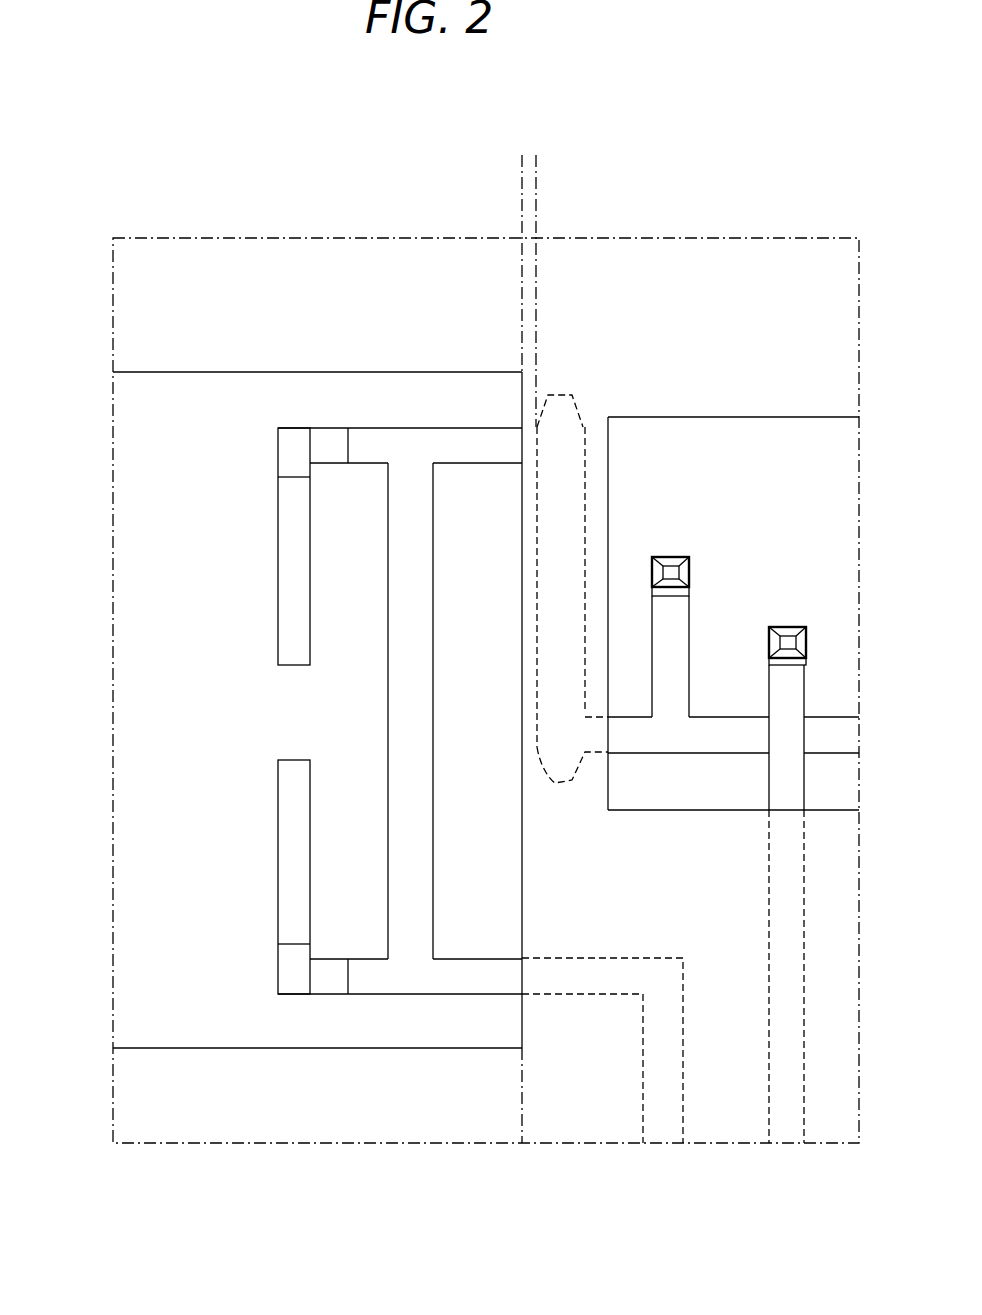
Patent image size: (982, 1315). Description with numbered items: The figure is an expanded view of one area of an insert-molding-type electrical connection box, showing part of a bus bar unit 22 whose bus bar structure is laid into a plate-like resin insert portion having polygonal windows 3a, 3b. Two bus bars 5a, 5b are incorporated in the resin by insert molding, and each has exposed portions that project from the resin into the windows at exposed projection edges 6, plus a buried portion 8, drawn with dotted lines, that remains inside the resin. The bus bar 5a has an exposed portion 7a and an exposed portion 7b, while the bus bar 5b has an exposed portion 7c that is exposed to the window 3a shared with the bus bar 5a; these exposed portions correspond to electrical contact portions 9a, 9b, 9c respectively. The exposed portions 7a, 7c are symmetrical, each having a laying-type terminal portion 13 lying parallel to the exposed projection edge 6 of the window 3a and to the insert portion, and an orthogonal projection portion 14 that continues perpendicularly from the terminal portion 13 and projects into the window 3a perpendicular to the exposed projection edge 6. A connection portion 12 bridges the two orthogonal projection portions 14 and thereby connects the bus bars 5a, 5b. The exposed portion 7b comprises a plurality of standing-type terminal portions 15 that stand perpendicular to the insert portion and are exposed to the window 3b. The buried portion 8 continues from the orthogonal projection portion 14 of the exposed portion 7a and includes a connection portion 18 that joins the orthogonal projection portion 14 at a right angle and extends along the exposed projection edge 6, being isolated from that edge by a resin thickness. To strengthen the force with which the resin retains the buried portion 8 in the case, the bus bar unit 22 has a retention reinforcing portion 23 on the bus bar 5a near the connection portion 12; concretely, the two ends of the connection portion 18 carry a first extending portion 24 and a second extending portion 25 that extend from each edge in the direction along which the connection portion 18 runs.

The window 3a is at (327, 372).
The window 3b is at (734, 417).
The bus bar 5a is at (411, 402).
The bus bar 5b is at (433, 1020).
The exposed projection edge 6 is at (608, 452).
The exposed portion 7a is at (162, 546).
The electrical contact portion 9a is at (245, 555).
The exposed portion 7b is at (757, 798).
The electrical contact portion 9b is at (757, 798).
The exposed portion 7c is at (162, 877).
The electrical contact portion 9c is at (162, 877).
The buried portion 8 is at (602, 708).
The connection portion 12 is at (388, 715).
The terminal portion 13 is at (162, 711).
The orthogonal projection portion 14 is at (340, 428).
The terminal portion 15 is at (668, 557).
The connection portion 18 is at (522, 622).
The bus bar unit 22 is at (297, 723).
The retention reinforcing portion 23 is at (593, 580).
The first extending portion 24 is at (560, 395).
The second extending portion 25 is at (558, 785).